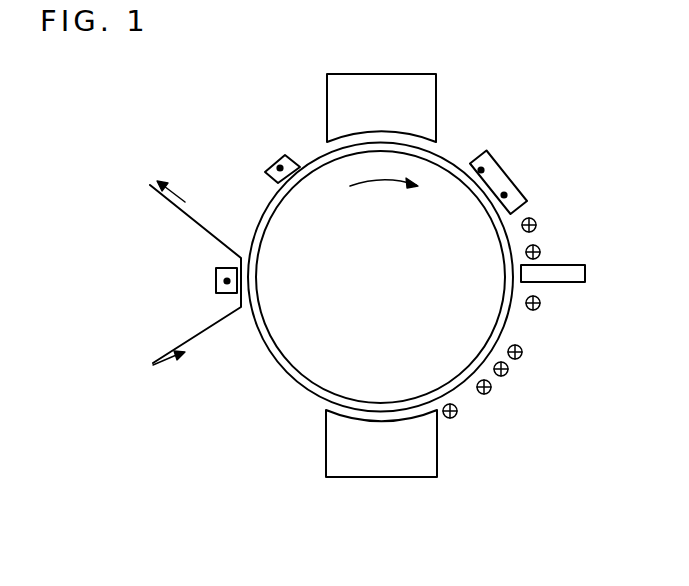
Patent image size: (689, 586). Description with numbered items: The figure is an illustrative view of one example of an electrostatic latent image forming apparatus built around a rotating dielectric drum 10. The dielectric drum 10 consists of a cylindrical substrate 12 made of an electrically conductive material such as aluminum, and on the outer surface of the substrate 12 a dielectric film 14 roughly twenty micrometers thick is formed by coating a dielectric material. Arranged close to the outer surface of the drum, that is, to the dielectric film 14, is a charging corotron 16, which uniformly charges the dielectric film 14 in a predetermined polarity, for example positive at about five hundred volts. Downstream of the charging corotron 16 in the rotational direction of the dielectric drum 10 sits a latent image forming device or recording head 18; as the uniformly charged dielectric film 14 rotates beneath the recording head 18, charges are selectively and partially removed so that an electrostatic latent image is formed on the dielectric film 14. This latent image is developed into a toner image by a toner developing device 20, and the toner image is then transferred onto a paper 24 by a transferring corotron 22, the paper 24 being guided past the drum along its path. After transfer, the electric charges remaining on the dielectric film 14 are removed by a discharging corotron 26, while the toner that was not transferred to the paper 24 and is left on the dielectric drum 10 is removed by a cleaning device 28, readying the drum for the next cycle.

The dielectric drum 10 is at (248, 206).
The cylindrical substrate 12 is at (313, 366).
The dielectric film 14 is at (505, 318).
The charging corotron 16 is at (495, 178).
The latent image forming device or recording head 18 is at (585, 273).
The toner developing device 20 is at (402, 467).
The transferring corotron 22 is at (216, 288).
The paper 24 is at (202, 334).
The discharging corotron 26 is at (285, 153).
The cleaning device 28 is at (423, 97).